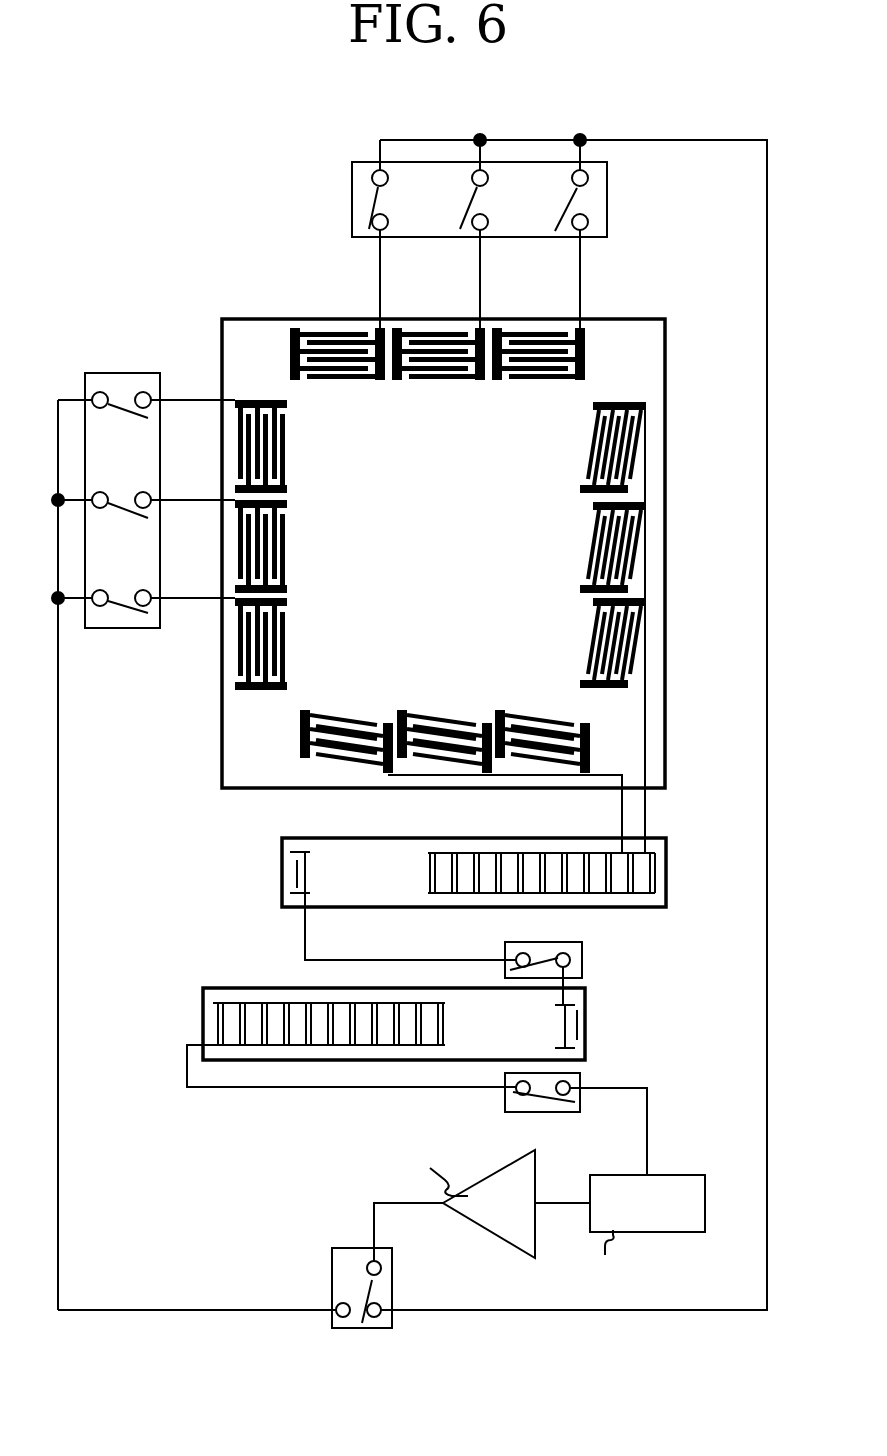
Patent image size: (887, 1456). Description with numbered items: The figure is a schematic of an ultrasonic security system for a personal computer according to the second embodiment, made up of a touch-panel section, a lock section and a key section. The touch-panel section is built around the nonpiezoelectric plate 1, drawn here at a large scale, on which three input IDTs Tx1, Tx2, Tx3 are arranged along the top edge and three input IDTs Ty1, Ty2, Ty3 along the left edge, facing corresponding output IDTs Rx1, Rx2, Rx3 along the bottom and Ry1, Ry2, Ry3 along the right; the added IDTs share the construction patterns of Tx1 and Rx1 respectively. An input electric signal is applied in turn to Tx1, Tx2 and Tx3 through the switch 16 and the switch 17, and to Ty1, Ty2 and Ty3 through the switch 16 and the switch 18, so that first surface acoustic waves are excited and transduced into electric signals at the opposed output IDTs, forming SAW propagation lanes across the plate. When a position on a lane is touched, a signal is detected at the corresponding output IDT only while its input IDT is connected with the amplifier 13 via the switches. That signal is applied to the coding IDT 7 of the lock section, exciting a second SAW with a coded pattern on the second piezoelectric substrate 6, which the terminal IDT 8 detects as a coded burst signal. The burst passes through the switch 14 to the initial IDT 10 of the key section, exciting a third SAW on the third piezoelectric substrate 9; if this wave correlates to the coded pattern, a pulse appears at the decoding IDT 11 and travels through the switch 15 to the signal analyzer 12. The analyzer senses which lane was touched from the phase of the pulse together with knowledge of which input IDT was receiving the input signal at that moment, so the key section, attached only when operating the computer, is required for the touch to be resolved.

The nonpiezoelectric plate 1 is at (640, 338).
The second piezoelectric substrate 6 is at (378, 903).
The coding IDT 7 is at (640, 893).
The terminal IDT 8 is at (297, 862).
The third piezoelectric substrate 9 is at (283, 1052).
The initial IDT 10 is at (577, 1028).
The decoding IDT 11 is at (268, 1003).
The signal analyzer 12 is at (646, 1237).
The amplifier 13 is at (419, 1204).
The switch 14 is at (582, 960).
The switch 15 is at (510, 1095).
The switch 16 is at (340, 1262).
The switch 17 is at (365, 187).
The switch 18 is at (119, 381).
The input IDT Tx1 is at (308, 320).
The input IDT Tx2 is at (408, 320).
The input IDT Tx3 is at (508, 320).
The input IDT Ty1 is at (237, 621).
The input IDT Ty2 is at (237, 523).
The input IDT Ty3 is at (237, 423).
The output IDT Rx1 is at (337, 752).
The output IDT Rx2 is at (439, 752).
The output IDT Rx3 is at (539, 752).
The output IDT Ry1 is at (632, 628).
The output IDT Ry2 is at (632, 530).
The output IDT Ry3 is at (632, 430).